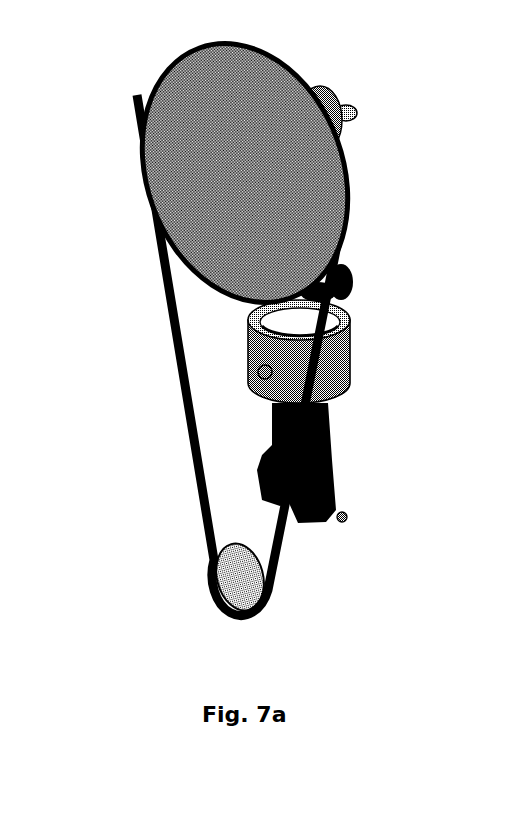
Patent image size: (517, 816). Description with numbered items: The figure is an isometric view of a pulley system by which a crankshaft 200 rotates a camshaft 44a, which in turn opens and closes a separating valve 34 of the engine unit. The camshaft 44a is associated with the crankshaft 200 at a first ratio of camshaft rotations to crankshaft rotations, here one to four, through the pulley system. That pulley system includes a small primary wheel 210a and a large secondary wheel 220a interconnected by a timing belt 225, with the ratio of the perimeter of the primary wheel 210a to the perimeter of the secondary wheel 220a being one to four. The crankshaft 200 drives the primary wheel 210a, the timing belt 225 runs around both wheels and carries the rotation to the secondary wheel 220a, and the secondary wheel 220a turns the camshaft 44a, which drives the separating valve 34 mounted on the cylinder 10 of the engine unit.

The secondary wheel 220a is at (150, 128).
The camshaft 44a is at (315, 120).
The separating valve 34 is at (345, 273).
The cylinder 10 is at (362, 357).
The crankshaft 200 is at (340, 517).
The primary wheel 210a is at (222, 585).
The timing belt 225 is at (182, 372).